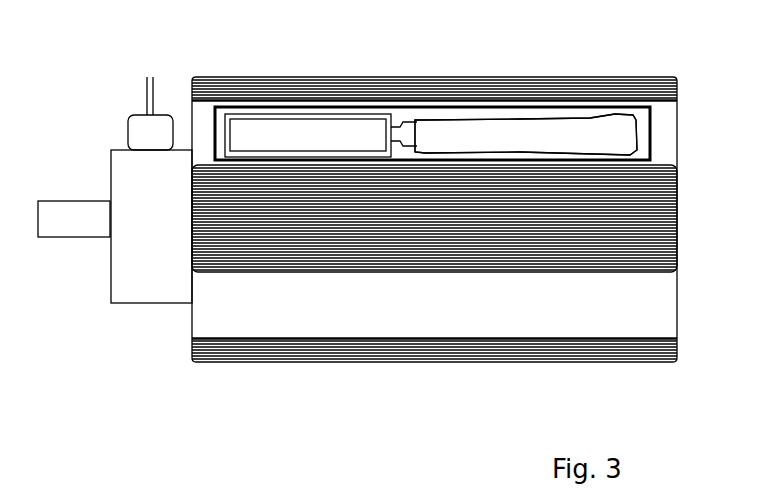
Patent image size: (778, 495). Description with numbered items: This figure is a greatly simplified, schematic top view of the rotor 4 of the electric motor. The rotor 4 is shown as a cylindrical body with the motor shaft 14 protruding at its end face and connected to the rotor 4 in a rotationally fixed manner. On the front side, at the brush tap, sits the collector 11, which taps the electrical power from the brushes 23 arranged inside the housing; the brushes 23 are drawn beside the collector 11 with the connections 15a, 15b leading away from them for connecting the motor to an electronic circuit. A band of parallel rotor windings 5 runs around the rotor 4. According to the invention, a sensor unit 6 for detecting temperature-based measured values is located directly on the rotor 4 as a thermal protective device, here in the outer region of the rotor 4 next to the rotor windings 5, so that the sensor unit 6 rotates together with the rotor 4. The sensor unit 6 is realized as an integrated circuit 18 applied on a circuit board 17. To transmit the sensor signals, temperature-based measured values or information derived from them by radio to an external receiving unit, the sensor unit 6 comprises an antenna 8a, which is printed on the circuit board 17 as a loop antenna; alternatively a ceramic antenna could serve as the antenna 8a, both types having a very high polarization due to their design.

The rotor 4 is at (263, 383).
The rotor winding 5 is at (660, 217).
The sensor unit 6 is at (360, 105).
The antenna 8a is at (478, 117).
The collector 11 is at (137, 293).
The motor shaft 14 is at (68, 217).
The connection 15a is at (142, 68).
The connection 15b is at (142, 68).
The circuit board 17 is at (570, 113).
The integrated circuit 18 is at (267, 132).
The brushes 23 is at (140, 127).